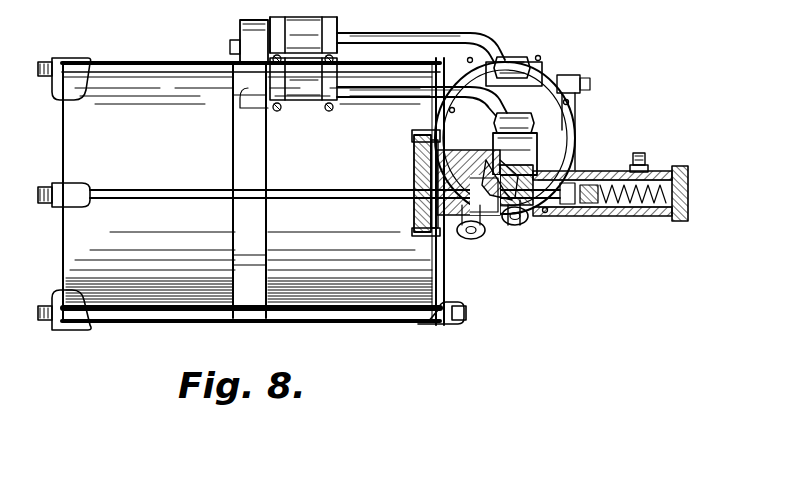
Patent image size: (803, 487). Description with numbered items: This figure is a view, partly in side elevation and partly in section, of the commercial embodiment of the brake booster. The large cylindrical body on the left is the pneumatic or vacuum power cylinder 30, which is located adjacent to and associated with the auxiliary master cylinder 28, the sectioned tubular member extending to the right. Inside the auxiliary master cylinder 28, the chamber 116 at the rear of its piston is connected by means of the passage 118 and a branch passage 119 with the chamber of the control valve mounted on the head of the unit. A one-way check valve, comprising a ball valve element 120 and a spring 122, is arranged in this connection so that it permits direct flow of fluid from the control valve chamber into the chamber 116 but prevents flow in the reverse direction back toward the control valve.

The power cylinder 30 is at (142, 58).
The passage 118 is at (470, 172).
The chamber 116 is at (455, 235).
The branch passage 119 is at (524, 208).
The ball valve element 120 is at (495, 215).
The spring 122 is at (482, 230).
The auxiliary master cylinder 28 is at (648, 216).